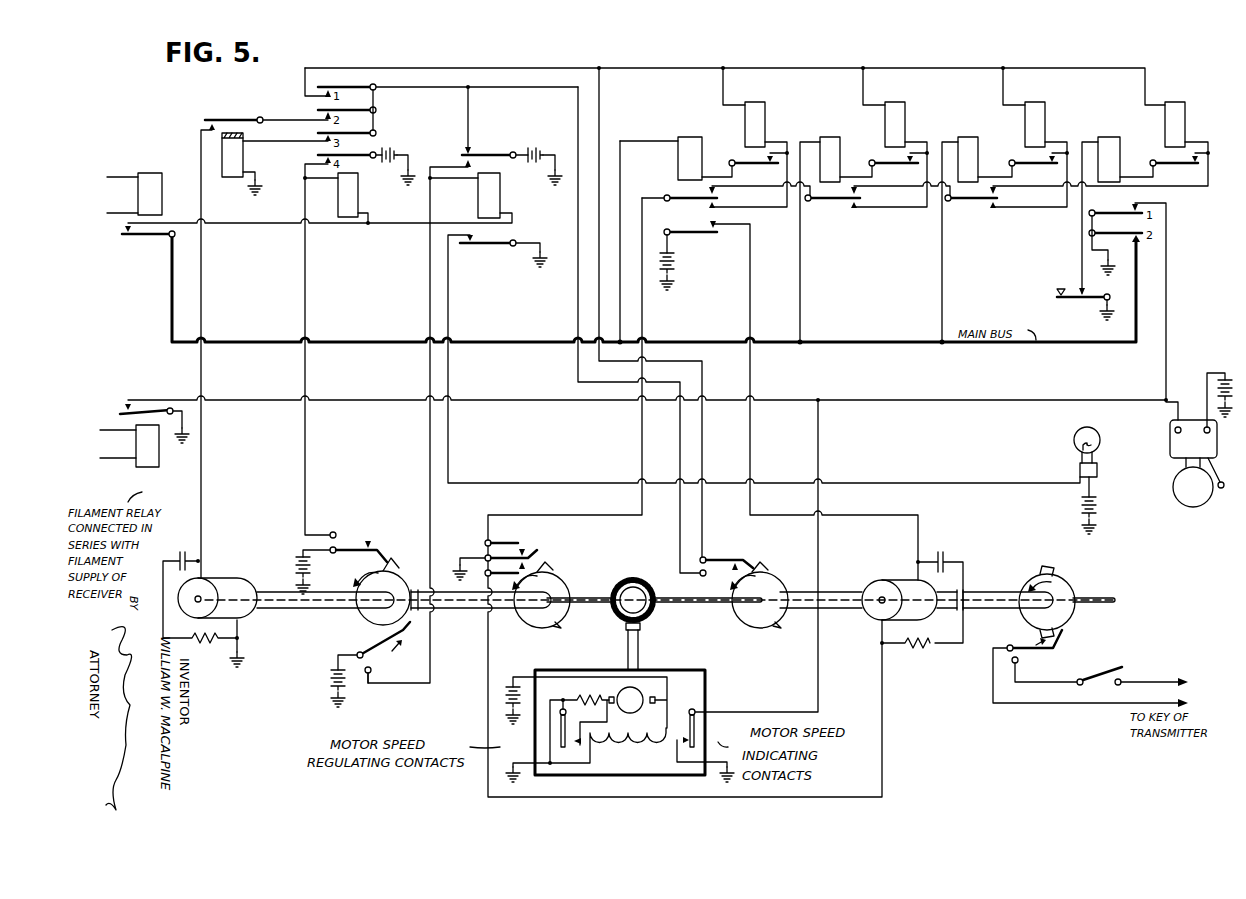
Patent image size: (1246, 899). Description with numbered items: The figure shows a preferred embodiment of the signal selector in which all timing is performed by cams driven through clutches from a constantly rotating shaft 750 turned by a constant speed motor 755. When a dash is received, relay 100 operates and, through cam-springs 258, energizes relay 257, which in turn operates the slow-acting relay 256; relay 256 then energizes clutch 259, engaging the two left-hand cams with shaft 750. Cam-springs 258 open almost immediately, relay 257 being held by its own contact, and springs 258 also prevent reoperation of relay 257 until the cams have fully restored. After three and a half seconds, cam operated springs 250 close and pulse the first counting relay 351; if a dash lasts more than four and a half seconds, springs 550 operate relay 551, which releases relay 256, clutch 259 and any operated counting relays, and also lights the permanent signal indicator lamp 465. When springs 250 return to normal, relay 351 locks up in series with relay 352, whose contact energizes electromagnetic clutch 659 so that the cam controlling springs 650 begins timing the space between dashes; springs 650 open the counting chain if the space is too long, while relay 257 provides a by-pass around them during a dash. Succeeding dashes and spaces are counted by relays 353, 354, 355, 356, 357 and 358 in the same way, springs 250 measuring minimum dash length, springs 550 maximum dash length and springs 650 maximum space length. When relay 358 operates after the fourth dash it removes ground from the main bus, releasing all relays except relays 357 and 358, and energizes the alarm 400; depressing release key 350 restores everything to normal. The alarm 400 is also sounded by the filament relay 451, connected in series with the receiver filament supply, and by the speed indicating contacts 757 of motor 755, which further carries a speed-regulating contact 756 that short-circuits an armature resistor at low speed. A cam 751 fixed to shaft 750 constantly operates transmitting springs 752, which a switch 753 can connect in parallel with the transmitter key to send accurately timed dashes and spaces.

The relay 100 is at (150, 180).
The relay 256 is at (234, 168).
The relay 257 is at (346, 192).
The relay 551 is at (478, 200).
The counting relay 352 is at (686, 143).
The counting relay 351 is at (765, 122).
The counting relay 353 is at (905, 118).
The counting relay 354 is at (828, 145).
The counting relay 355 is at (1045, 118).
The counting relay 356 is at (966, 145).
The counting relay 357 is at (1185, 118).
The counting relay 358 is at (1106, 145).
The release key 350 is at (1070, 302).
The filament relay 451 is at (148, 457).
The permanent signal indicator lamp 465 is at (1100, 438).
The alarm 400 is at (1173, 487).
The clutch 259 is at (243, 614).
The cam-springs 258 is at (366, 540).
The cam operated springs 550 is at (382, 661).
The cam operated springs 250 is at (524, 556).
The cam springs 650 is at (729, 566).
The shaft 750 is at (695, 604).
The electromagnetic clutch 659 is at (870, 616).
The cam 751 is at (1068, 589).
The transmitting springs 752 is at (1030, 657).
The switch 753 is at (1122, 679).
The constant speed motor 755 is at (623, 732).
The speed-regulating contact 756 is at (560, 727).
The speed indicating contacts 757 is at (700, 730).